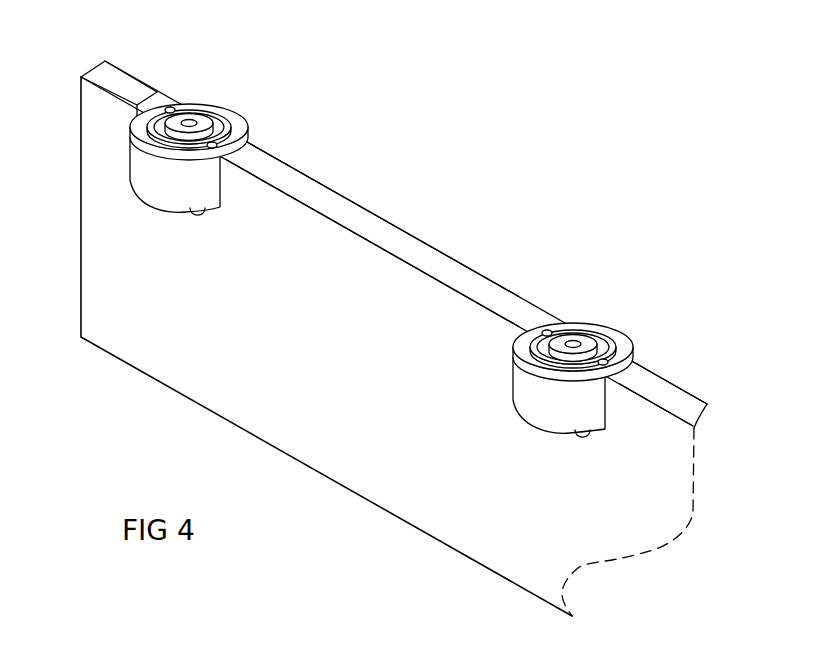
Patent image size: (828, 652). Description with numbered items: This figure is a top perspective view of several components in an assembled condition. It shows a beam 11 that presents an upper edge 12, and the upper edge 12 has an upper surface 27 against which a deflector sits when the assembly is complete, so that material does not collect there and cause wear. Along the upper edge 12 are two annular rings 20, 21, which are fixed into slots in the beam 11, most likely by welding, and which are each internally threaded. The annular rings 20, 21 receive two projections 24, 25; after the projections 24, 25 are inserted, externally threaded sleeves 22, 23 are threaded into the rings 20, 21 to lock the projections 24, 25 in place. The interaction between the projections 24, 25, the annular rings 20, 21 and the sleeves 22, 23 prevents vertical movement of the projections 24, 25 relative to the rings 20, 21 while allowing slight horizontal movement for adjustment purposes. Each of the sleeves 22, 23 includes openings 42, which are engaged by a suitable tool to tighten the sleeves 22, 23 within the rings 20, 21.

The beam 11 is at (348, 413).
The upper edge 12 is at (357, 217).
The annular ring 20 is at (150, 187).
The annular ring 21 is at (552, 413).
The sleeve 22 is at (221, 117).
The sleeve 23 is at (607, 340).
The projection 24 is at (203, 110).
The projection 25 is at (585, 340).
The upper surface 27 is at (685, 403).
The openings 42 is at (169, 106).